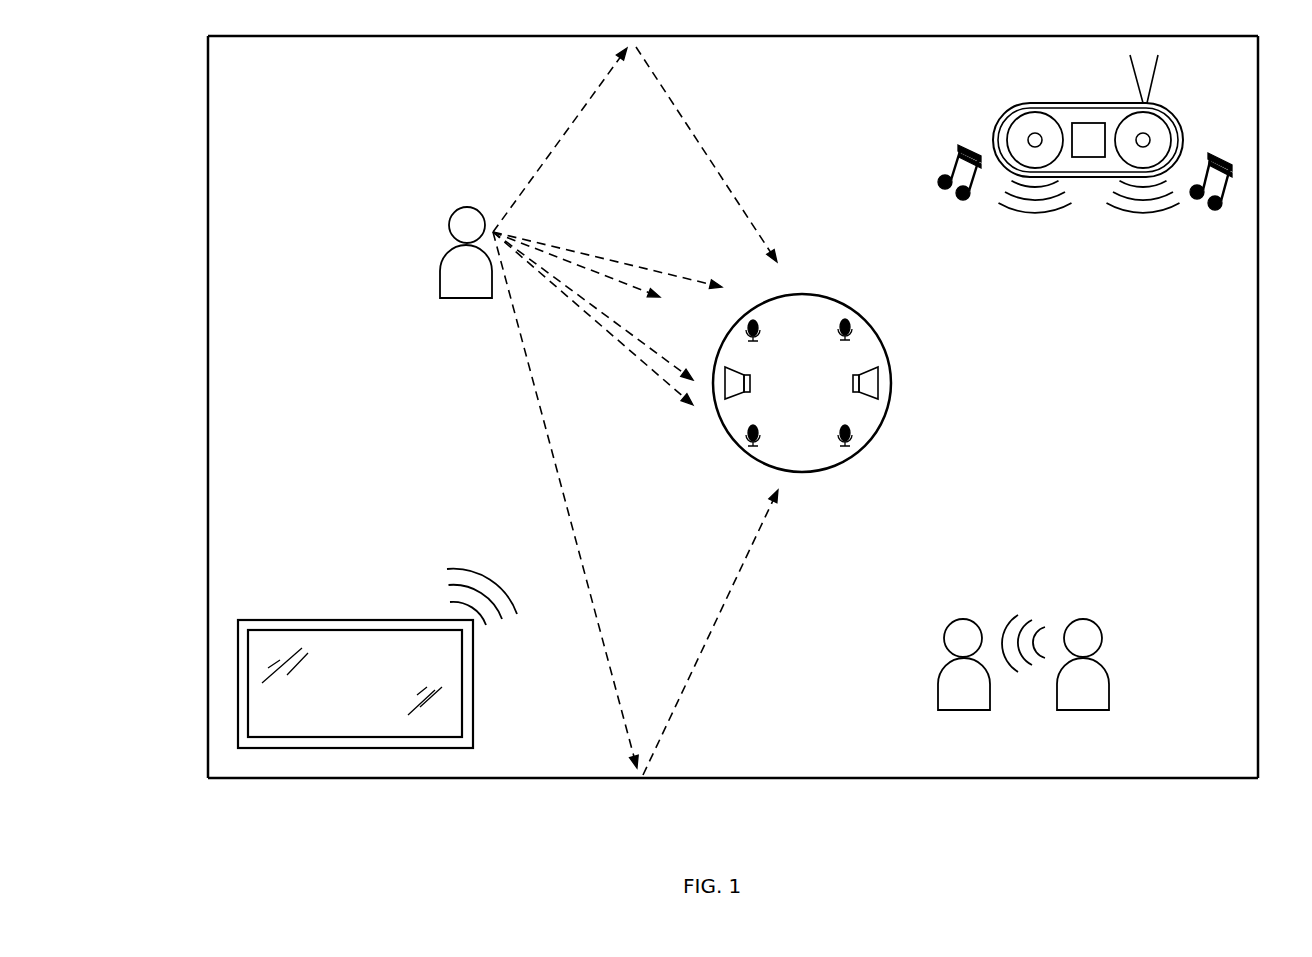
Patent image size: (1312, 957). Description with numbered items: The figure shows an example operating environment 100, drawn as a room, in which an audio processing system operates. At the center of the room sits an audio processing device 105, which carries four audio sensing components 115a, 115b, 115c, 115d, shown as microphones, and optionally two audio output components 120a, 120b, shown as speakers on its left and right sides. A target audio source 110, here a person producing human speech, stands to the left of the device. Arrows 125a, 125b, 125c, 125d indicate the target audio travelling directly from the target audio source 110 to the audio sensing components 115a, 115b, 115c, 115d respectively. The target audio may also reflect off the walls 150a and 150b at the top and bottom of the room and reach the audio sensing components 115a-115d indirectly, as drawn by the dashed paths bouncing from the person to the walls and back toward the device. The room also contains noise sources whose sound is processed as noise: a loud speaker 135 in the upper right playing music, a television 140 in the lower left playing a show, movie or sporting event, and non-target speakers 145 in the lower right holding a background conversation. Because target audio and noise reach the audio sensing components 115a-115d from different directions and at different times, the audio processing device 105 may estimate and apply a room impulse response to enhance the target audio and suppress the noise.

The operating environment 100 is at (156, 82).
The audio processing device 105 is at (812, 292).
The target audio source 110 is at (449, 222).
The audio sensing component 115a is at (760, 338).
The audio sensing component 115b is at (848, 314).
The audio sensing component 115c is at (762, 430).
The audio sensing component 115d is at (848, 450).
The audio output component 120a is at (734, 398).
The audio output component 120b is at (881, 381).
The arrow 125a is at (597, 256).
The arrow 125b is at (612, 277).
The arrow 125c is at (666, 362).
The arrow 125d is at (626, 355).
The loud speaker 135 is at (1030, 104).
The television 140 is at (356, 620).
The non-target speakers 145 is at (1098, 660).
The wall 150a is at (858, 38).
The wall 150b is at (840, 757).